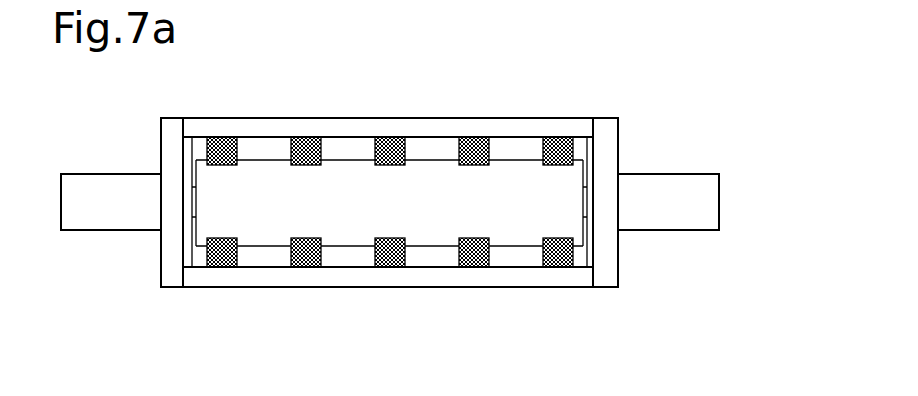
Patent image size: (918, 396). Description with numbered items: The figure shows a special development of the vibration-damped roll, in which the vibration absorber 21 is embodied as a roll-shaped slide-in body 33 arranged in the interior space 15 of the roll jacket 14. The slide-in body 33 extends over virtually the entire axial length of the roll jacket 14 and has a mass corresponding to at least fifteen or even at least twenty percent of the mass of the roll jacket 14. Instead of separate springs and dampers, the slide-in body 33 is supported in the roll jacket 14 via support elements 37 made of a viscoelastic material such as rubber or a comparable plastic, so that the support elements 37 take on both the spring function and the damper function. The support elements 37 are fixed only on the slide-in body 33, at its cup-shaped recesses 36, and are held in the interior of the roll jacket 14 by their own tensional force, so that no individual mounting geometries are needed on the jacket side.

The roll jacket 14 is at (430, 127).
The interior space 15 is at (430, 258).
The vibration absorber 21 is at (449, 149).
The slide-in body 33 is at (508, 173).
The cup-shaped recesses 36 is at (311, 162).
The support elements 37 is at (310, 138).